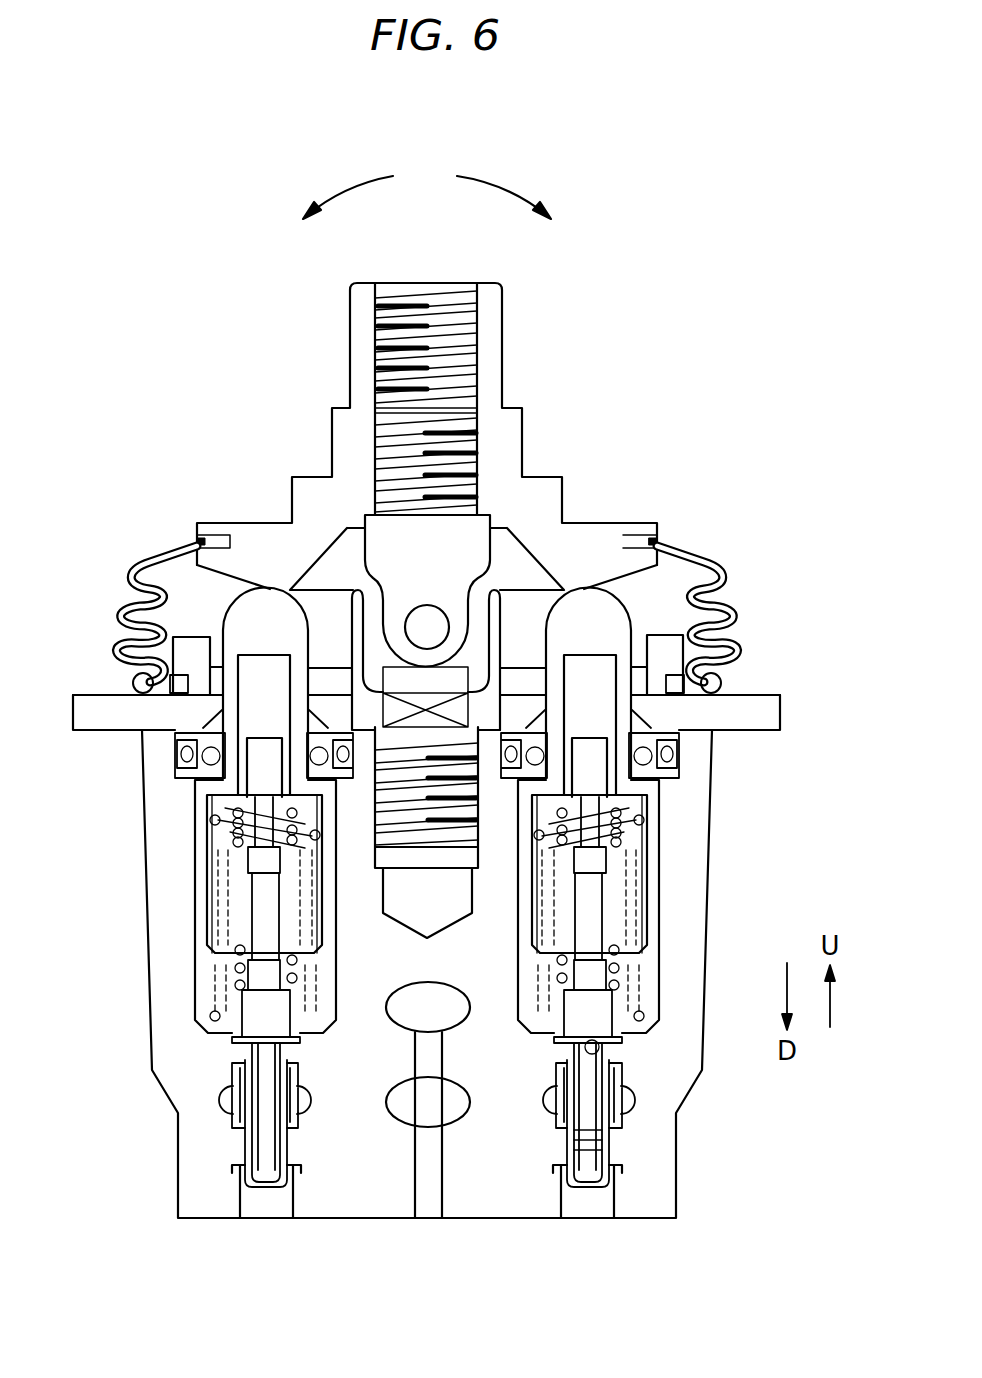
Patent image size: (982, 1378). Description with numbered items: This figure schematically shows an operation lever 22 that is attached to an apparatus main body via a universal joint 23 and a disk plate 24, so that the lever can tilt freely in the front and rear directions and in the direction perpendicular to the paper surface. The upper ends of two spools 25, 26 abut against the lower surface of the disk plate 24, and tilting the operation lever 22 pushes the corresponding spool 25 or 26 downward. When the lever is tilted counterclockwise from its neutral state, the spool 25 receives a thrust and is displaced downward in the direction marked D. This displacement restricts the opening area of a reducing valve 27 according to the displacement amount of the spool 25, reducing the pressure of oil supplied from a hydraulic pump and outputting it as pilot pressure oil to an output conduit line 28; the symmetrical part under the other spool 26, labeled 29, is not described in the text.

The operation lever 22 is at (350, 340).
The universal joint 23 is at (490, 553).
The disk plate 24 is at (260, 532).
The spool 25 is at (160, 563).
The spool 26 is at (612, 608).
The reducing valve 27 is at (237, 1055).
The output conduit line 28 is at (265, 1205).
The right plunger foot 29 is at (595, 1203).